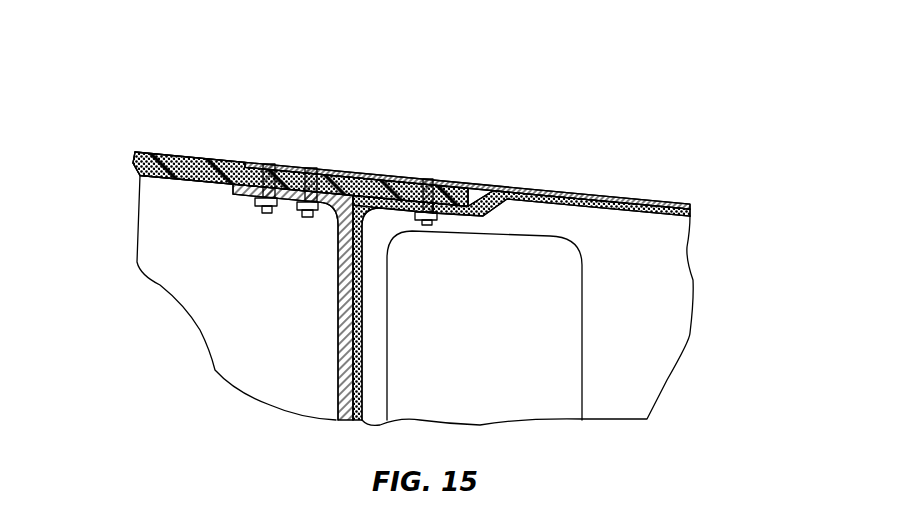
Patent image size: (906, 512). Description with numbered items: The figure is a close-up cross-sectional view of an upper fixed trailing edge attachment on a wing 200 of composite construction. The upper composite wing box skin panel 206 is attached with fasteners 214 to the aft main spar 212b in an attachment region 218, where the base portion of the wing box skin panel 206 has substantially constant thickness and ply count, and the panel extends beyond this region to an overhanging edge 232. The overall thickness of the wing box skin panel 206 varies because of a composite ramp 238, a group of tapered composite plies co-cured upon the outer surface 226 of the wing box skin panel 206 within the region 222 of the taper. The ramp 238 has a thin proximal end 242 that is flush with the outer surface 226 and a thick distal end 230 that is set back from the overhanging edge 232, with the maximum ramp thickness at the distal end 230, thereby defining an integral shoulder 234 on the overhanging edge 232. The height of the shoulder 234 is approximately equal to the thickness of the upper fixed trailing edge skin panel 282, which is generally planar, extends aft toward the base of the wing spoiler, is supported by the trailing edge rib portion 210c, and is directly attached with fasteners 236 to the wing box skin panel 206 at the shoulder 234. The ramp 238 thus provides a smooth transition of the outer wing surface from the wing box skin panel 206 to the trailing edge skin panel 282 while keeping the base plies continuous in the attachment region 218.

The wing 200 is at (598, 86).
The wing box skin panel 206 is at (180, 175).
The trailing edge rib portion 210c is at (375, 323).
The aft main spar 212b is at (343, 302).
The fasteners 214 is at (307, 219).
The attachment region 218 is at (380, 119).
The region of the ramp or taper 222 is at (434, 239).
The outer surface 226 is at (128, 136).
The distal end 230 is at (418, 174).
The overhanging edge 232 is at (465, 203).
The shoulder 234 is at (450, 182).
The fasteners 236 is at (427, 226).
The composite ramp 238 is at (350, 169).
The proximal end 242 is at (178, 152).
The upper fixed trailing edge skin panel 282 is at (483, 186).